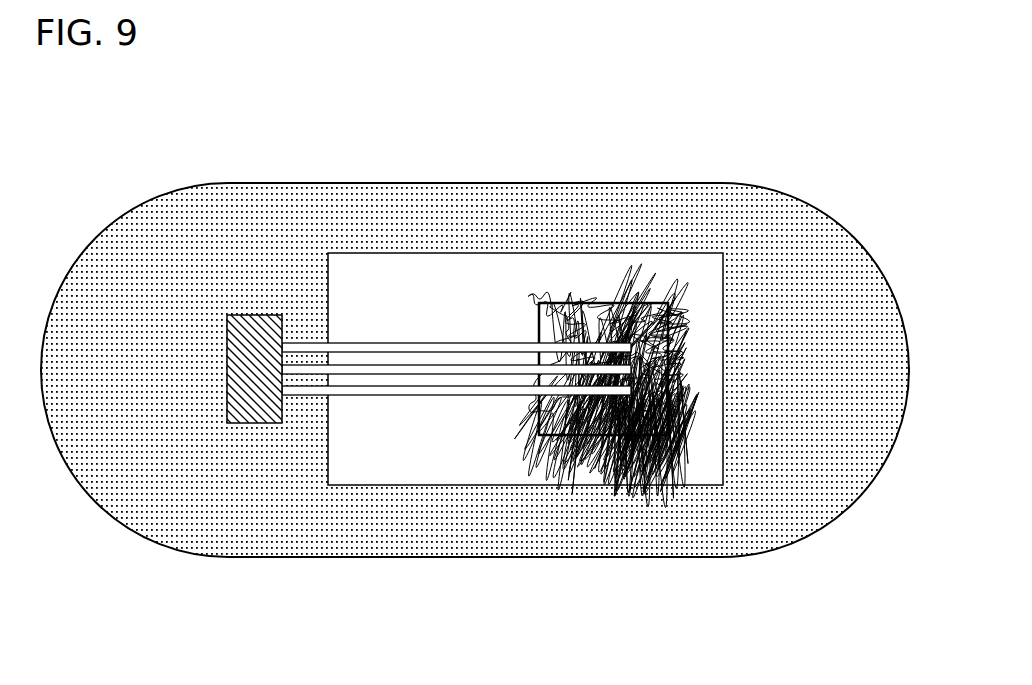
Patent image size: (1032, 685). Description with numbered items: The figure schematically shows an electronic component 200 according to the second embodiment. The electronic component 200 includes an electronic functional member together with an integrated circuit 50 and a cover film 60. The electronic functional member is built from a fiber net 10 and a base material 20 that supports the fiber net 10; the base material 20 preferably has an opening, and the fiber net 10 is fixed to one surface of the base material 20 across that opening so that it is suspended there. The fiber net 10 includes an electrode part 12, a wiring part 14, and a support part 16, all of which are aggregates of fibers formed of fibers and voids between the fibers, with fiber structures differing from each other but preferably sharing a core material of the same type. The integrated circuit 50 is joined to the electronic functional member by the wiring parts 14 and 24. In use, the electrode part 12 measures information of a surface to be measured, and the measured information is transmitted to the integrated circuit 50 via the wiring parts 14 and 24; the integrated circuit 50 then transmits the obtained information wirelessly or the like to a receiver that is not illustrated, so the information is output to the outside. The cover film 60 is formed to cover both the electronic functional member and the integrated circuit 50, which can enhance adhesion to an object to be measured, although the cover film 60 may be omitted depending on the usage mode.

The electronic component 200 is at (760, 136).
The cover film 60 is at (795, 237).
The base material 20 is at (633, 244).
The fiber net 10 is at (607, 371).
The support part 16 is at (652, 423).
The wiring part 14 is at (545, 352).
The electrode part 12 is at (627, 352).
The wiring part 24 is at (459, 371).
The integrated circuit 50 is at (257, 315).